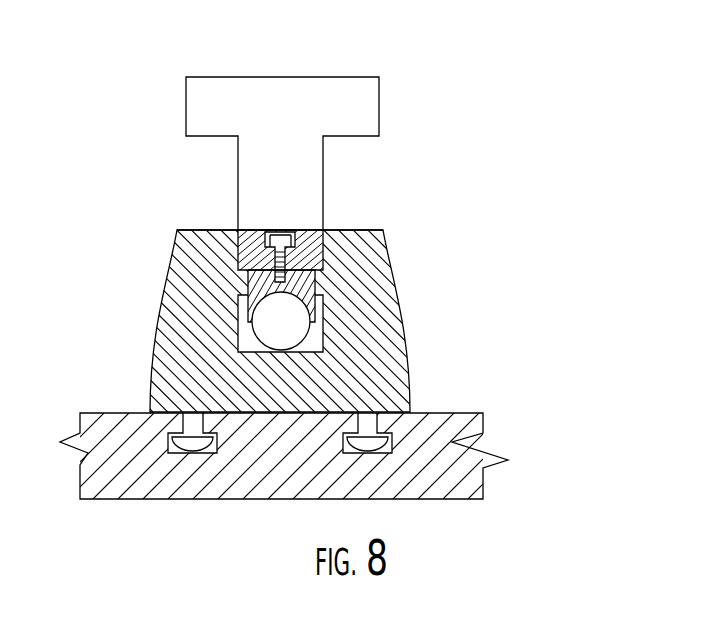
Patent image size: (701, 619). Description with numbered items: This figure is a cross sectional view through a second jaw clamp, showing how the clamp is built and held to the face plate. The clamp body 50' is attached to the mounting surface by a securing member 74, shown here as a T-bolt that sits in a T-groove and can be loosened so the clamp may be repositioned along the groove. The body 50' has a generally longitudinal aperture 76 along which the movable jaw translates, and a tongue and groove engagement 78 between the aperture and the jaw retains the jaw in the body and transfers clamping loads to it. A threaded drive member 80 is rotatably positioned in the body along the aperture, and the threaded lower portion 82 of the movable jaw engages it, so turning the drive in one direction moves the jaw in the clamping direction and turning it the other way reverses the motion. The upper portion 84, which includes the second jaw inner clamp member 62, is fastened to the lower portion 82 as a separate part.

The second jaw inner clamp member 62 is at (208, 88).
The upper portion 84 is at (199, 232).
The longitudinal aperture 76 is at (318, 253).
The tongue and groove engagement 78 is at (315, 284).
The body 50' is at (304, 321).
The threaded drive member 80 is at (287, 322).
The lower portion 82 is at (240, 322).
The securing member 74 is at (368, 445).